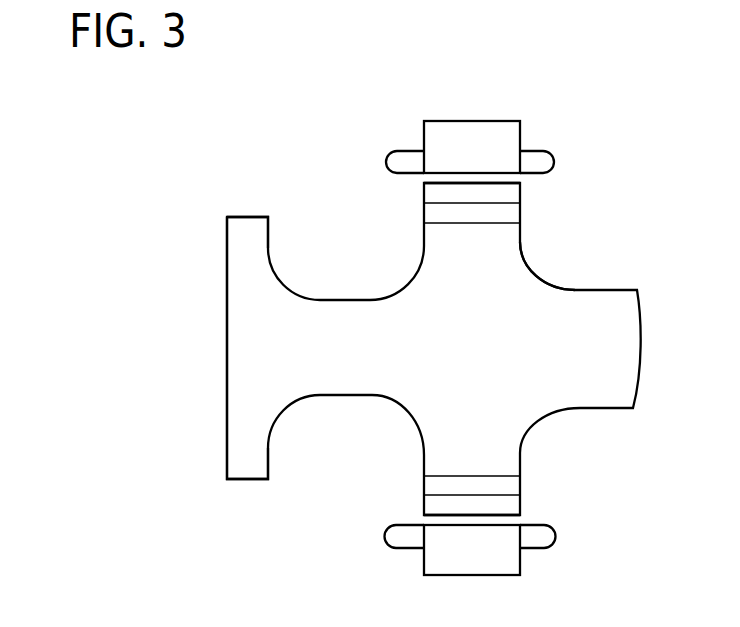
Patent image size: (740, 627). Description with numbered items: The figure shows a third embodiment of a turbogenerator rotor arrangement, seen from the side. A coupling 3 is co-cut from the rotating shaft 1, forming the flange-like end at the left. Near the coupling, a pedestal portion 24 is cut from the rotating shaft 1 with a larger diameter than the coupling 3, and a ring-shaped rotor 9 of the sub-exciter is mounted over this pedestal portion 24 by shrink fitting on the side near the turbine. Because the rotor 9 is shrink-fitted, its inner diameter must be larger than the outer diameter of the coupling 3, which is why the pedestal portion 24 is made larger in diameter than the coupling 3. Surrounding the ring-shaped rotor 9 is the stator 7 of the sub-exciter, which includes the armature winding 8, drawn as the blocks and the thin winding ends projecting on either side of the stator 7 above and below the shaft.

The rotating shaft 1 is at (615, 300).
The coupling 3 is at (247, 228).
The stator 7 is at (497, 133).
The armature winding 8 is at (545, 163).
The ring-shaped rotor 9 is at (510, 195).
The pedestal portion 24 is at (552, 278).